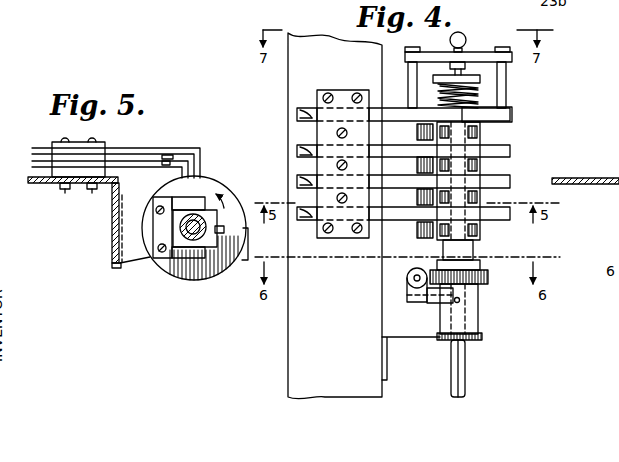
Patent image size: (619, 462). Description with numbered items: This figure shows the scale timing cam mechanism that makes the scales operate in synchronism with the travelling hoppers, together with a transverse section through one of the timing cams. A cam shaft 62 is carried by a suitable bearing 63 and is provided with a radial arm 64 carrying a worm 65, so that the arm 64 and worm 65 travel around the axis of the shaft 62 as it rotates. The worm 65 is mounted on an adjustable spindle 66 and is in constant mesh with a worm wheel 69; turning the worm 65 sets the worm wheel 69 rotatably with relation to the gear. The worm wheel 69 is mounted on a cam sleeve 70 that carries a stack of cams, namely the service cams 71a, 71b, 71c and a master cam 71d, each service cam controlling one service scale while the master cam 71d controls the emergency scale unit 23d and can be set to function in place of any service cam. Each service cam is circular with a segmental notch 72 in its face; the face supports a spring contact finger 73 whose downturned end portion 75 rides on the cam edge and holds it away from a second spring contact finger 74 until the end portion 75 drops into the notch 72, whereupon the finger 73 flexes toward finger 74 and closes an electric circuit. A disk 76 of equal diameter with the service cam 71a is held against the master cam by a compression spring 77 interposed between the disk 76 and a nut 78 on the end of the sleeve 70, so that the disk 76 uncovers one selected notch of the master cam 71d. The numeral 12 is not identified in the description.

In FIG. 4, the frame 12 is at (151, 0).
In FIG. 4, the emergency scale unit 23d is at (232, 0).
In FIG. 4, the cam shaft 62 is at (463, 381).
In FIG. 5, the cam shaft 62 is at (172, 282).
In FIG. 4, the bearing 63 is at (422, 340).
In FIG. 4, the radial arm 64 is at (437, 301).
In FIG. 4, the worm 65 is at (405, 275).
In FIG. 4, the adjustable spindle 66 is at (416, 282).
In FIG. 4, the worm wheel 69 is at (485, 281).
In FIG. 4, the cam sleeve 70 is at (470, 255).
In FIG. 5, the cam sleeve 70 is at (183, 223).
In FIG. 4, the cam 71a is at (512, 212).
In FIG. 4, the cam 71b is at (512, 182).
In FIG. 4, the cam 71c is at (512, 152).
In FIG. 4, the master cam 71d is at (512, 113).
In FIG. 5, the segmental notch 72 is at (241, 276).
In FIG. 5, the spring contact finger 73 is at (180, 149).
In FIG. 5, the spring contact finger 74 is at (140, 194).
In FIG. 5, the downturned end portion 75 is at (203, 166).
In FIG. 4, the disk 76 is at (505, 120).
In FIG. 4, the compression spring 77 is at (478, 93).
In FIG. 4, the nut 78 is at (472, 75).